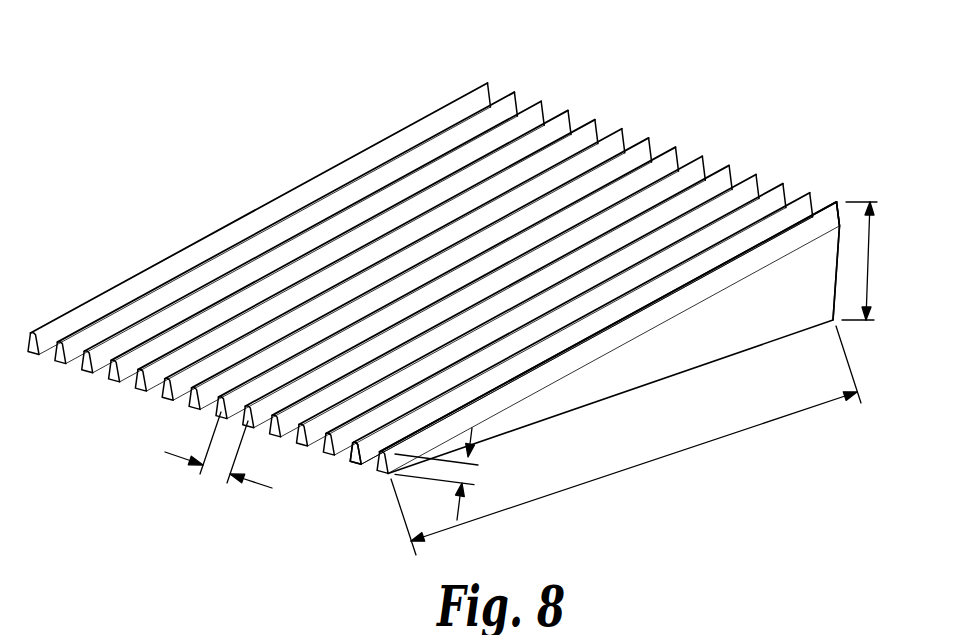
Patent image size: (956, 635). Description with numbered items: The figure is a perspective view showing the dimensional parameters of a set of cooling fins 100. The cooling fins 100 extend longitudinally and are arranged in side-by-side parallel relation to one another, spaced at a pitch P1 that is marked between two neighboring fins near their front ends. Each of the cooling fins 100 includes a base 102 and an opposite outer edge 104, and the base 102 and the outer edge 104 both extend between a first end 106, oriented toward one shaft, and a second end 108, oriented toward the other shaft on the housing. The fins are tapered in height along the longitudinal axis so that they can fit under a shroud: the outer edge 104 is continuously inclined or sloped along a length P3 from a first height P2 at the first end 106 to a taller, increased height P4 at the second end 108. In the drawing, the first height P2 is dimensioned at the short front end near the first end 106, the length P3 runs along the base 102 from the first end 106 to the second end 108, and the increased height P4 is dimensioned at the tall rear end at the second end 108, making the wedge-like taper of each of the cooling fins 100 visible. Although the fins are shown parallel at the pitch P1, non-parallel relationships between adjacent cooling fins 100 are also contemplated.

The cooling fins 100 is at (489, 84).
The base 102 is at (733, 353).
The outer edge 104 is at (598, 323).
The first end 106 is at (352, 456).
The second end 108 is at (837, 278).
The pitch P1 is at (218, 462).
The first height P2 is at (455, 474).
The length P3 is at (626, 440).
The increased height P4 is at (876, 261).